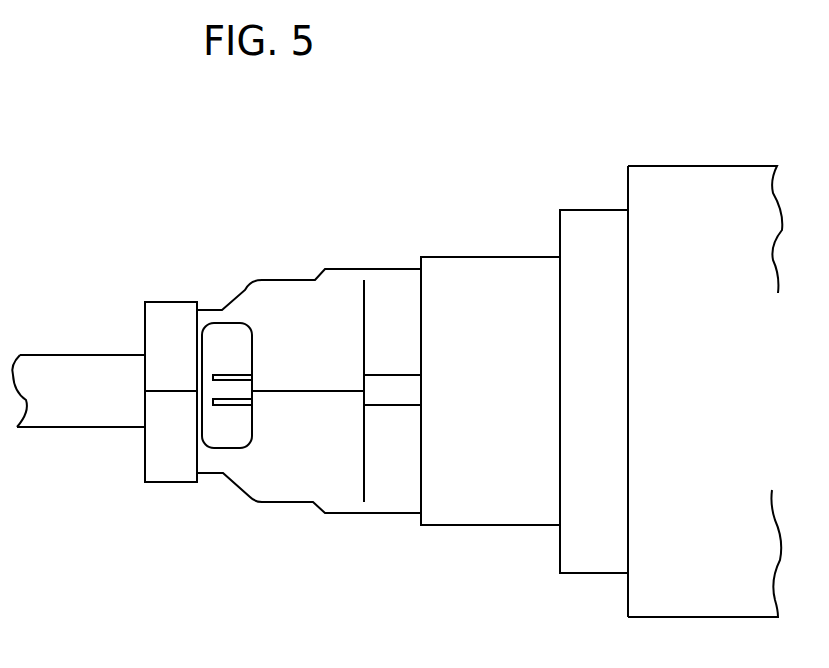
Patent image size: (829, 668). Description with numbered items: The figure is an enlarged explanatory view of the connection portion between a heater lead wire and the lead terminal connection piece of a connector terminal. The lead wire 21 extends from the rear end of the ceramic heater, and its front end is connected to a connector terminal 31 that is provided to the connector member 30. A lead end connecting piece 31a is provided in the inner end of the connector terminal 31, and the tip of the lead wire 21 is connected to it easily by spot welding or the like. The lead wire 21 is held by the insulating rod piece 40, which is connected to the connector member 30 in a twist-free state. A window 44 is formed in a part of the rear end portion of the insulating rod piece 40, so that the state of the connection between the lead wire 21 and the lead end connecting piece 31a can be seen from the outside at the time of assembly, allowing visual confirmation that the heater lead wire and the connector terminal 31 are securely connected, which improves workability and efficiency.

The lead wire 21 is at (235, 388).
The connector member 30 is at (732, 200).
The connector terminal 31 is at (399, 385).
The lead end connecting piece 31a is at (242, 407).
The insulating rod piece 40 is at (175, 322).
The window 44 is at (230, 323).